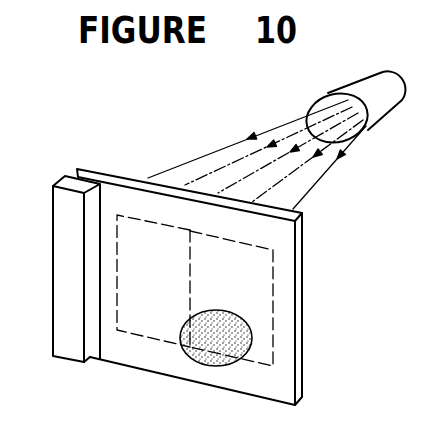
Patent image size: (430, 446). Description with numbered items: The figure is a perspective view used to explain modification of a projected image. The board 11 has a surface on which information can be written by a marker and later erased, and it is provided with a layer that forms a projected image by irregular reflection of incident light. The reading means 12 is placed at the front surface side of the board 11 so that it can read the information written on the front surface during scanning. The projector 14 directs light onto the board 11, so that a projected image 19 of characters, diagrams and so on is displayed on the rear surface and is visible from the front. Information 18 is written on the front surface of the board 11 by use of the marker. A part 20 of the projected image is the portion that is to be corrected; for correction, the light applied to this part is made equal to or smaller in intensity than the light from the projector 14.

The board 11 is at (303, 281).
The reading means 12 is at (68, 327).
The projector 14 is at (353, 94).
The information 18 is at (153, 300).
The projected image 19 is at (177, 345).
The part of the projected image to be corrected 20 is at (232, 366).